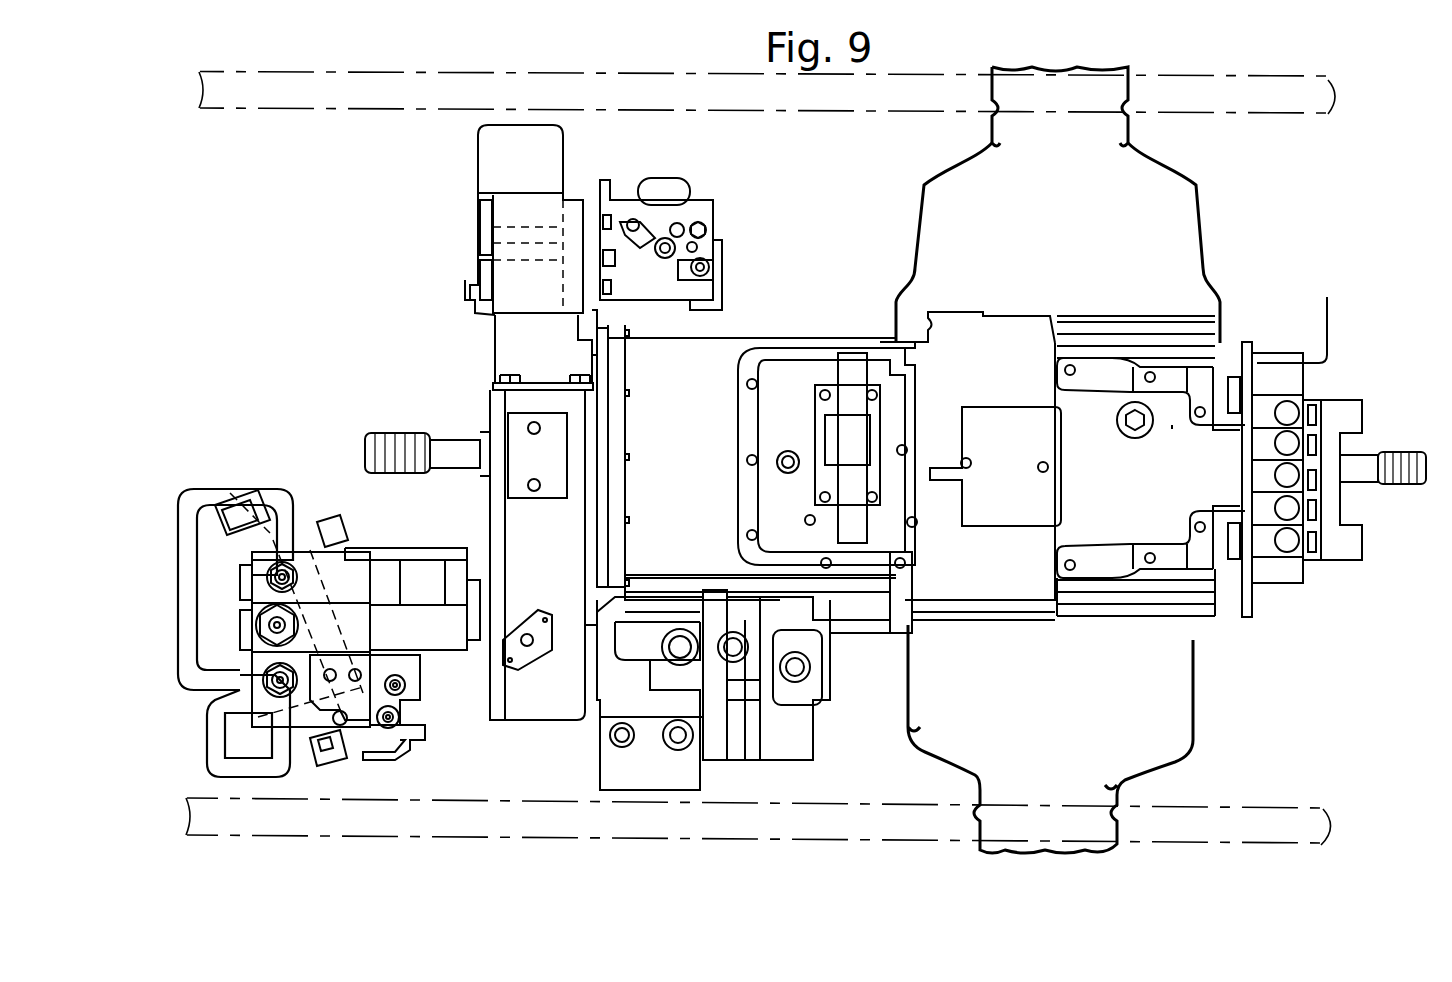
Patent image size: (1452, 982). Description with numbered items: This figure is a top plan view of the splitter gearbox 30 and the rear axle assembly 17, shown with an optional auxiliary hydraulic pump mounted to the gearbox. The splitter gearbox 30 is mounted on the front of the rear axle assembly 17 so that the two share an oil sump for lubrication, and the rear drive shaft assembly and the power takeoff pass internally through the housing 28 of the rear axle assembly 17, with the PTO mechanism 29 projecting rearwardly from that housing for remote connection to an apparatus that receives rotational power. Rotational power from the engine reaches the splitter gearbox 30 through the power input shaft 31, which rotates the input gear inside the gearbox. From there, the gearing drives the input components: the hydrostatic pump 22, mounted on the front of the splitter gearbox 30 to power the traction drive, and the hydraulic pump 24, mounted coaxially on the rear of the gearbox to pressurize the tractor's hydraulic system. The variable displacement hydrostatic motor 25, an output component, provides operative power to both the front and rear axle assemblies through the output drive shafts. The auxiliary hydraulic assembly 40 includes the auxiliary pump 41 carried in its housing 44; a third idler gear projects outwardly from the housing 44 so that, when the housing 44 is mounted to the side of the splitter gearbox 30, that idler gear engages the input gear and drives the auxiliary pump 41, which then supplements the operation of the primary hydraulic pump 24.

The rear axle assembly 17 is at (1205, 240).
The hydrostatic pump 22 is at (348, 552).
The hydraulic pump 24 is at (800, 755).
The variable displacement hydrostatic motor 25 is at (230, 565).
The housing 28 is at (720, 337).
The power takeoff (PTO) mechanism 29 is at (1395, 452).
The splitter gearbox 30 is at (533, 730).
The power input shaft 31 is at (403, 433).
The auxiliary hydraulic assembly 40 is at (444, 178).
The auxiliary pump 41 is at (712, 220).
The housing 44 is at (495, 339).